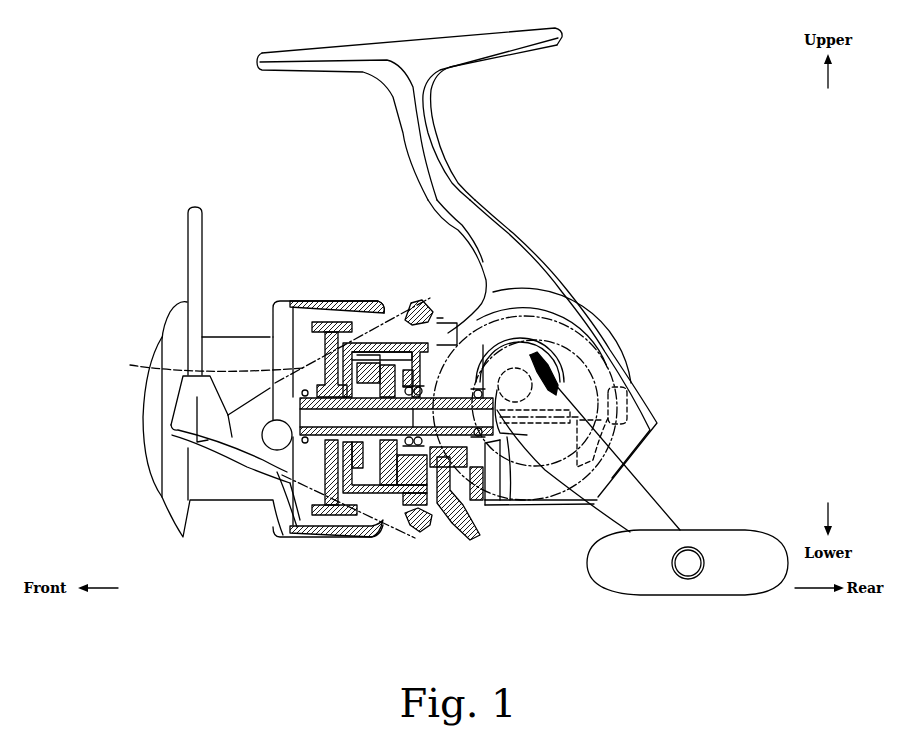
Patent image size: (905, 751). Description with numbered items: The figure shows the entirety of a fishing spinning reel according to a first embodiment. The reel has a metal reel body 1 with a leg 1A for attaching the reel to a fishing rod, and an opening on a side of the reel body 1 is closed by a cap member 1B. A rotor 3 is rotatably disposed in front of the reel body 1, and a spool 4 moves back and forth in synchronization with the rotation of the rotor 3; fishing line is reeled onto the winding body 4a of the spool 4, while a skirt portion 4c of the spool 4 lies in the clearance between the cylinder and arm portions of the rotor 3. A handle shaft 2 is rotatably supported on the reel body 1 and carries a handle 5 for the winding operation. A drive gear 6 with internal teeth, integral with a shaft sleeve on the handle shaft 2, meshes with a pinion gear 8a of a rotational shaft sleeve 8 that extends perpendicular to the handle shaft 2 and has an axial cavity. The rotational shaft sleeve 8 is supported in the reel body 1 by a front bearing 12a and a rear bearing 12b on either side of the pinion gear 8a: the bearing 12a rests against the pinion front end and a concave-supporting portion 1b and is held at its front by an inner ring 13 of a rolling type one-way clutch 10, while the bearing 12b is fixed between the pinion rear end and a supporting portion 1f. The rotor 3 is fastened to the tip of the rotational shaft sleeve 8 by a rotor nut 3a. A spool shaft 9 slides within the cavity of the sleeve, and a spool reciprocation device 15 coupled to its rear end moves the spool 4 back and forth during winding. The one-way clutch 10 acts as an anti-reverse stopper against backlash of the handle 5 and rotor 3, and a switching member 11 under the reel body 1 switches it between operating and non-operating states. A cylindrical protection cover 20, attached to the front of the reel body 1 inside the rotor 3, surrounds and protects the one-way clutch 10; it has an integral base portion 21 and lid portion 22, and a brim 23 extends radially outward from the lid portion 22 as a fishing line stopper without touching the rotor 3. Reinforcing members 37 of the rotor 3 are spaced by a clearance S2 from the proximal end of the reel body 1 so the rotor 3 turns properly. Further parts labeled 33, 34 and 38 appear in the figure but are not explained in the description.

The reel body 1 is at (576, 201).
The leg 1A is at (462, 187).
The cap member 1B is at (613, 366).
The concave-supporting portion 1b is at (402, 343).
The supporting portion 1f is at (473, 320).
The handle shaft 2 is at (575, 347).
The rotor 3 is at (338, 318).
The rotor nut 3a is at (165, 367).
The spool 4 is at (288, 305).
The winding body 4a is at (234, 335).
The skirt portion 4c is at (362, 320).
The handle 5 is at (668, 507).
The drive gear 6 is at (545, 316).
The rotational shaft sleeve 8 is at (407, 495).
The pinion gear 8a is at (495, 462).
The spool shaft 9 is at (517, 462).
The one-way clutch 10 is at (370, 448).
The switching member 11 is at (458, 530).
The bearing 12a is at (413, 318).
The bearing 12b is at (473, 332).
The inner ring 13 is at (370, 345).
The spool reciprocation device 15 is at (619, 436).
The protection cover 20 is at (308, 318).
The base portion 21 is at (385, 350).
The lid portion 22 is at (322, 528).
The brim 23 is at (342, 303).
The rotor arm 33 is at (227, 445).
The bail support pivot 34 is at (273, 442).
The reinforcing members 37 is at (410, 308).
The bail arm 38 is at (190, 257).
The clearance S2 is at (440, 315).